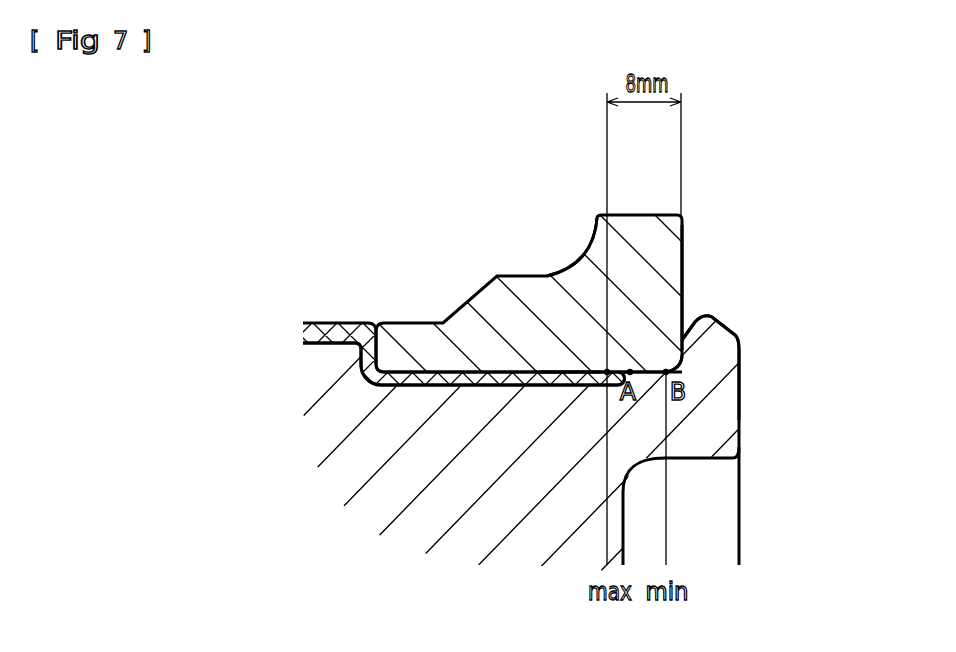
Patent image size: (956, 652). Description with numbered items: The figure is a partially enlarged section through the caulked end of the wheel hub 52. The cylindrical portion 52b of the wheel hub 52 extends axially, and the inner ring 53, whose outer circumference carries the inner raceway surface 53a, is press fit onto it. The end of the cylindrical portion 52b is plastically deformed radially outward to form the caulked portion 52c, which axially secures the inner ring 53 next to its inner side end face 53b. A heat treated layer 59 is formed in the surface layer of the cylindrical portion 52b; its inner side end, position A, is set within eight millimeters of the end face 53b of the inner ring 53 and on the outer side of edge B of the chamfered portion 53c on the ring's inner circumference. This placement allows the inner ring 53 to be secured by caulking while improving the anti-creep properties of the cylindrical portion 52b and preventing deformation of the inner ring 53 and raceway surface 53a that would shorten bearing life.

The wheel hub 52 is at (447, 543).
The cylindrical portion 52b is at (580, 370).
The protruding wall of housing 52c is at (707, 366).
The inner ring 53 is at (626, 194).
The inner raceway surface 53a is at (574, 264).
The side surface of seal member 53b is at (684, 258).
The chamfered portion 53c is at (678, 365).
The heat treated layer 59 is at (422, 388).